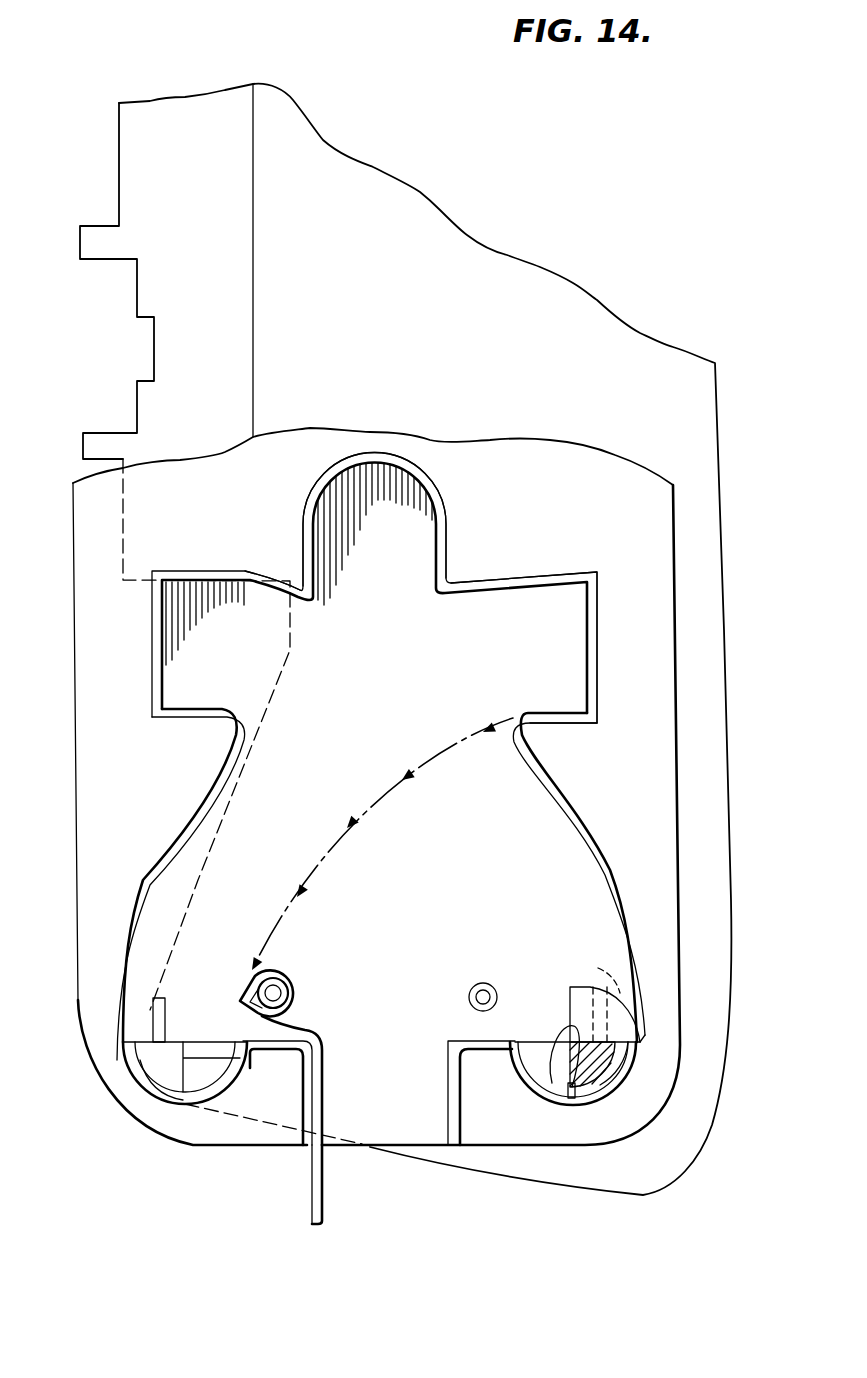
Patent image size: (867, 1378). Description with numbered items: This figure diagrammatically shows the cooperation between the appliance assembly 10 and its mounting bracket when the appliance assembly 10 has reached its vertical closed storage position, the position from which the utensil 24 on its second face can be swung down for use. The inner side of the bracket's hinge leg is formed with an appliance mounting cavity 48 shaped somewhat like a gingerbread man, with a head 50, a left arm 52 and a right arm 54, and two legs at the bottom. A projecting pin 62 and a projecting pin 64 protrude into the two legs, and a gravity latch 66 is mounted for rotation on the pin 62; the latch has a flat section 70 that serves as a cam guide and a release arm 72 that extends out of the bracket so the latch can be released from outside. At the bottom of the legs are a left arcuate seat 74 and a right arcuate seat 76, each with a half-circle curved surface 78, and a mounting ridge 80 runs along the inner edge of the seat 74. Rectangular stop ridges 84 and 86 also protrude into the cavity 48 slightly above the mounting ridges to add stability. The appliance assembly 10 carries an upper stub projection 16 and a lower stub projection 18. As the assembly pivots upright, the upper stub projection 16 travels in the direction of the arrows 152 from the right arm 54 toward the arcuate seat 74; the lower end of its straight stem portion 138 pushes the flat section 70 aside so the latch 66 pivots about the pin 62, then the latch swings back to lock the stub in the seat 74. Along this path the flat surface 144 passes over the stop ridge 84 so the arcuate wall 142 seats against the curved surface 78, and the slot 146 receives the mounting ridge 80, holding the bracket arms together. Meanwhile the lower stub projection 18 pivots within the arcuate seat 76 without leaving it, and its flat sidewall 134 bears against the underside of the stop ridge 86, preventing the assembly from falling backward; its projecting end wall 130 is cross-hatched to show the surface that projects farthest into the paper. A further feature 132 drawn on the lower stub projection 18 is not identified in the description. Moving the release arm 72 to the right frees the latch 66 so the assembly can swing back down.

The appliance assembly 10 is at (410, 300).
The utensil 24 is at (109, 238).
The upper stub projection 16 is at (170, 1102).
The appliance mounting cavity 48 is at (362, 667).
The head 50 is at (412, 525).
The left arm 52 is at (240, 603).
The right arm 54 is at (598, 640).
The arcuate wall 142 is at (130, 1063).
The flat surface 144 is at (152, 1080).
The arrows 152 is at (362, 810).
The straight stem portion 138 is at (197, 1045).
The stop ridge 84 is at (135, 1030).
The mounting ridge 80 is at (226, 1082).
The curved surface 78 is at (196, 1090).
The left arcuate seat 74 is at (183, 1104).
The slot 146 is at (247, 1076).
The projecting pin 62 is at (284, 990).
The flat section 70 is at (248, 987).
The gravity latch 66 is at (312, 1030).
The release arm 72 is at (325, 1190).
The projecting pin 64 is at (483, 983).
The right arcuate seat 76 is at (550, 1047).
The fastener block 132 is at (577, 1008).
The stop ridge 86 is at (600, 969).
The flat sidewall 134 is at (571, 1093).
The lower stub projection 18 is at (618, 1027).
The projecting end wall 130 is at (620, 1083).